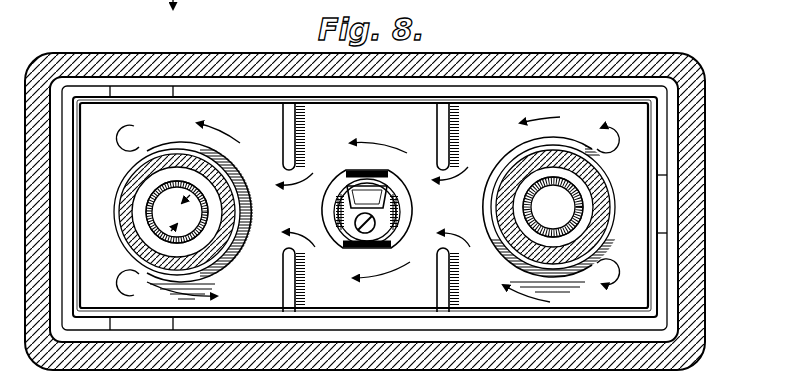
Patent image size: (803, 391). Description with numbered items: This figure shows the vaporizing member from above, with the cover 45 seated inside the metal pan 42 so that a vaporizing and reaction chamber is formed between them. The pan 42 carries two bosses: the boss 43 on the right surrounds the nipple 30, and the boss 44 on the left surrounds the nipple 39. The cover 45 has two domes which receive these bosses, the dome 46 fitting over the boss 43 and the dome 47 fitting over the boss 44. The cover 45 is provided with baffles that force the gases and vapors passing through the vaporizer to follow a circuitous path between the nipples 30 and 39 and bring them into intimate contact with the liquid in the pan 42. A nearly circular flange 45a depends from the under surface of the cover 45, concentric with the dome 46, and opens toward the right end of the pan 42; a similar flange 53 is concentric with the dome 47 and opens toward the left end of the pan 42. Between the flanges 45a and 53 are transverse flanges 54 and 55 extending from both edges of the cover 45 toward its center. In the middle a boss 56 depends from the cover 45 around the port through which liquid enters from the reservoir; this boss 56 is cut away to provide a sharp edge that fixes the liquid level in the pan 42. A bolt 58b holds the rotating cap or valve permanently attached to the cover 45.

The metal pan 42 is at (112, 66).
The cover 45 is at (610, 82).
The nipple 39 is at (152, 191).
The dome 47 is at (177, 212).
The boss 44 is at (150, 241).
The flange 53 is at (252, 217).
The transverse flange 54 is at (297, 128).
The transverse flange 55 is at (297, 288).
The boss 56 is at (338, 188).
The bolt 58b is at (374, 222).
The nipple 30 is at (578, 194).
The dome 46 is at (553, 207).
The boss 43 is at (600, 233).
The flange 45a is at (503, 253).